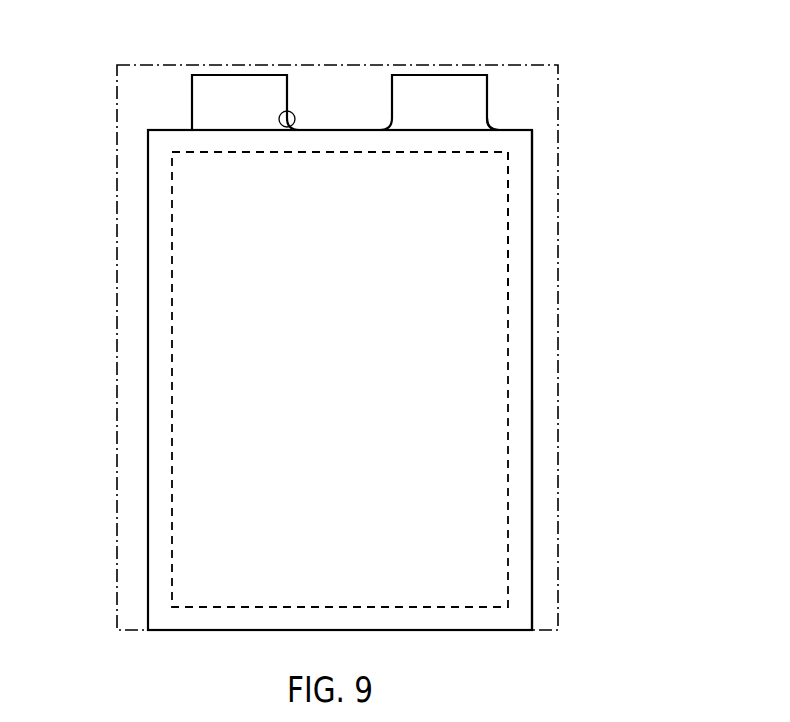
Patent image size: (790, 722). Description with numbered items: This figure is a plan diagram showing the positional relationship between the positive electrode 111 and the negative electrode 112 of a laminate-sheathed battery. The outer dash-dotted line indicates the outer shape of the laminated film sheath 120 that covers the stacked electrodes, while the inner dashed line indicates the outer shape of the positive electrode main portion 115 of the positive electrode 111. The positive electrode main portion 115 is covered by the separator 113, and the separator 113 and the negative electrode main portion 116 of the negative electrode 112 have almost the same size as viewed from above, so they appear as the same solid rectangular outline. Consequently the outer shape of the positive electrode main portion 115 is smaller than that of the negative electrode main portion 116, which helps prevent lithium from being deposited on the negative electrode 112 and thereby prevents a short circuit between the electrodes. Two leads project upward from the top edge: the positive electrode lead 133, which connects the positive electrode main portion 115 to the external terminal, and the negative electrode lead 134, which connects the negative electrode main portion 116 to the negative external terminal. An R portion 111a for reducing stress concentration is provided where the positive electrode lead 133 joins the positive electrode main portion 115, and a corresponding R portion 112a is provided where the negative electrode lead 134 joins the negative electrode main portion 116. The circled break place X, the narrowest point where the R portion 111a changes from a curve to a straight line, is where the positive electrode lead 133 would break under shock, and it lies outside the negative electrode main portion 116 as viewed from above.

The positive electrode 111 is at (170, 321).
The R portion 111a is at (190, 146).
The negative electrode 112 is at (541, 372).
The R portion 112a is at (497, 128).
The separator 113 is at (157, 218).
The positive electrode main portion 115 is at (493, 190).
The negative electrode main portion 116 is at (525, 477).
The laminated film sheath 120 is at (547, 257).
The positive electrode lead 133 is at (243, 88).
The negative electrode lead 134 is at (437, 80).
The break place X is at (296, 117).